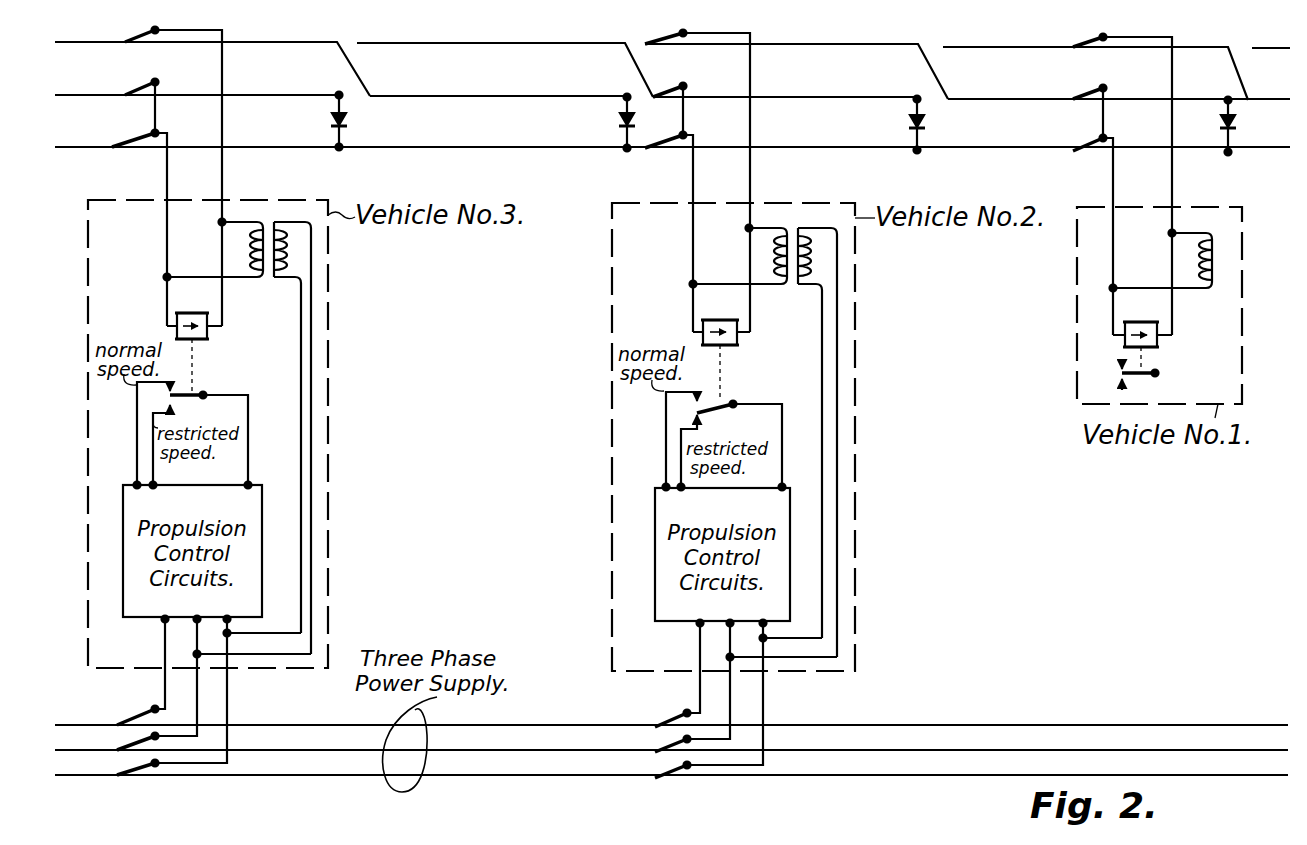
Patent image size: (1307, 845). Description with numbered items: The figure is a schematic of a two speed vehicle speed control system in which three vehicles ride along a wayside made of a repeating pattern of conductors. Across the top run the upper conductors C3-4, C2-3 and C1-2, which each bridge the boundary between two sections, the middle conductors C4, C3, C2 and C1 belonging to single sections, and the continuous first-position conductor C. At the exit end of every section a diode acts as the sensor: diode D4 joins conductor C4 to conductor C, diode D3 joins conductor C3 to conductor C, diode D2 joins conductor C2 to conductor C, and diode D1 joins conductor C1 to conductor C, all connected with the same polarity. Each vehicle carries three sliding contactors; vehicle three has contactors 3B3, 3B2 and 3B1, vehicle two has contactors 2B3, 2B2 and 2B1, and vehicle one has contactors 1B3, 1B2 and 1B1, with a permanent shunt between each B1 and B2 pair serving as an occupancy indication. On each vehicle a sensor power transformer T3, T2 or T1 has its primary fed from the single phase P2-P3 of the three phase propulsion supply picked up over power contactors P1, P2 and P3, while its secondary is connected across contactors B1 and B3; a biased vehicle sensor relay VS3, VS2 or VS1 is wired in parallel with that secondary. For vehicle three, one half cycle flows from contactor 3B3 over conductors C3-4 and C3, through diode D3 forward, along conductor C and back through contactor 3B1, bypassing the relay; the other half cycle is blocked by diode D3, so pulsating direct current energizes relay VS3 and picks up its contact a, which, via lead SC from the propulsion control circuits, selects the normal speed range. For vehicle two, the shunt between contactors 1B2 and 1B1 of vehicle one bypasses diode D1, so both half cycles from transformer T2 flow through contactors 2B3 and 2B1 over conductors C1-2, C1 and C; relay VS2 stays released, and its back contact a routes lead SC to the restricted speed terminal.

The contactor 3B3 is at (134, 36).
The contactor 3B2 is at (140, 88).
The contactor 3B1 is at (133, 221).
The contactor 2B3 is at (679, 33).
The contactor 2B2 is at (672, 97).
The contactor 2B1 is at (666, 224).
The contactor 1B3 is at (1116, 172).
The contactor 1B2 is at (1094, 92).
The contactor 1B1 is at (1088, 146).
The wayside conductor C3-4 is at (320, 44).
The wayside conductor C2-3 is at (591, 43).
The wayside conductor C1-2 is at (880, 48).
The wayside conductor C4 is at (296, 95).
The wayside conductor C3 is at (582, 95).
The wayside conductor C2 is at (890, 98).
The wayside conductor C1 is at (996, 98).
The continuous wayside conductor C is at (987, 148).
The diode D4 is at (348, 124).
The diode D3 is at (620, 117).
The diode D2 is at (909, 120).
The diode D1 is at (1220, 125).
The transformer T3 is at (280, 226).
The transformer T2 is at (800, 232).
The transformer T1 is at (1161, 251).
The vehicle sensor relay VS3 is at (194, 339).
The vehicle sensor relay VS2 is at (721, 345).
The vehicle sensor relay VS1 is at (1142, 332).
The lead SC is at (248, 420).
The relay contact a is at (205, 393).
The power contactor/supply line P1 is at (944, 712).
The power contactor/supply line P2 is at (950, 740).
The power contactor/supply line P3 is at (950, 765).